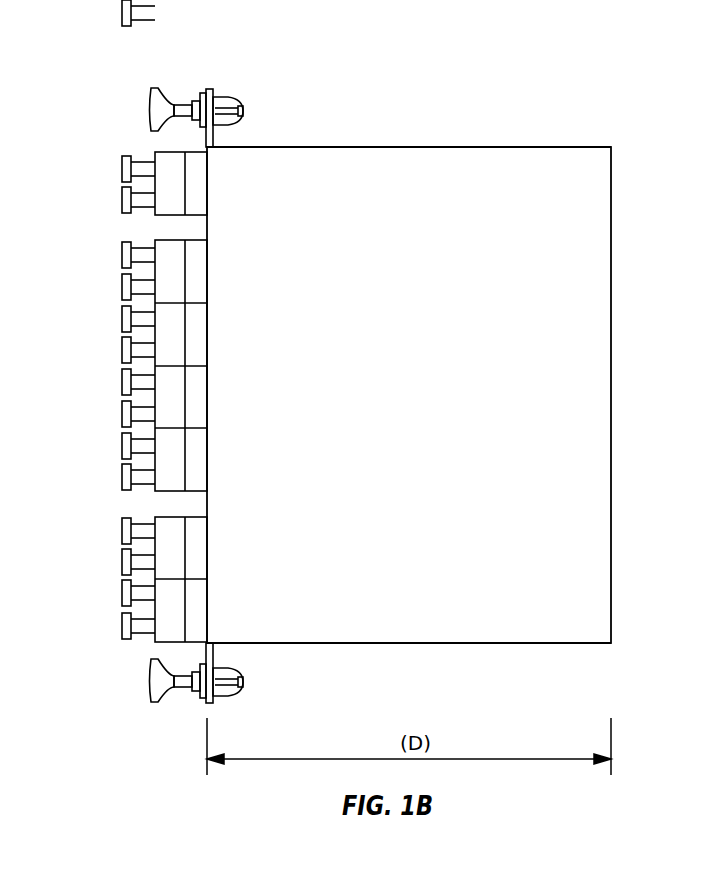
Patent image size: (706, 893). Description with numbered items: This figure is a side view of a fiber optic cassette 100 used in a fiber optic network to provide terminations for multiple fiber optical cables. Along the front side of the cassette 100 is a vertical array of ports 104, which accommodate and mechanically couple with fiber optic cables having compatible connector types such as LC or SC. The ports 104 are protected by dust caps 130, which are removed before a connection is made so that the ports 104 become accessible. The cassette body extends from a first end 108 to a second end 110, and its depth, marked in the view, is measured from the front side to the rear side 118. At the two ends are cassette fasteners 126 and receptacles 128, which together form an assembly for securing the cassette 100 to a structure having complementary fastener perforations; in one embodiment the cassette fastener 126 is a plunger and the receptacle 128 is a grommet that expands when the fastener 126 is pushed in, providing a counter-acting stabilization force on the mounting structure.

The fiber optic cassette 100 is at (494, 86).
The ports 104 is at (153, 333).
The first end 108 is at (207, 147).
The second end 110 is at (207, 643).
The rear side 118 is at (611, 258).
The cassette fastener 126 is at (150, 105).
The receptacle 128 is at (235, 98).
The dust cap 130 is at (127, 200).